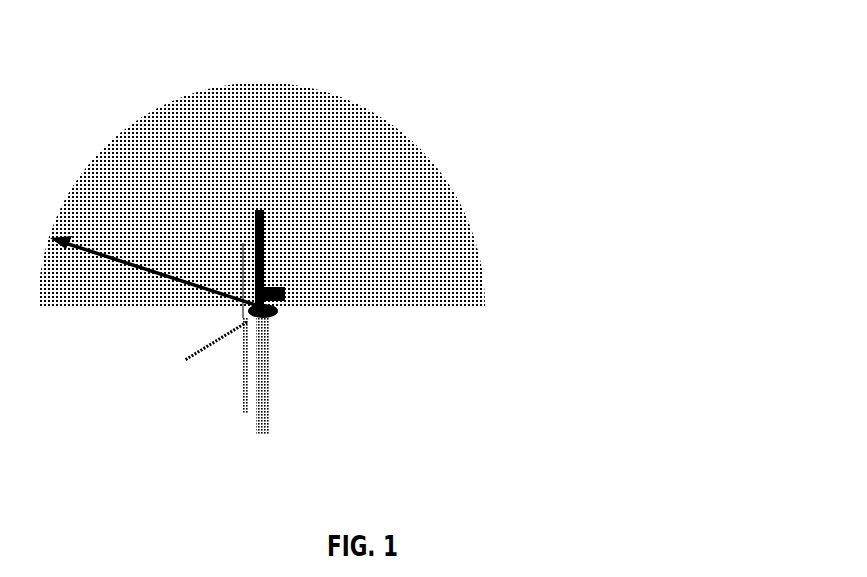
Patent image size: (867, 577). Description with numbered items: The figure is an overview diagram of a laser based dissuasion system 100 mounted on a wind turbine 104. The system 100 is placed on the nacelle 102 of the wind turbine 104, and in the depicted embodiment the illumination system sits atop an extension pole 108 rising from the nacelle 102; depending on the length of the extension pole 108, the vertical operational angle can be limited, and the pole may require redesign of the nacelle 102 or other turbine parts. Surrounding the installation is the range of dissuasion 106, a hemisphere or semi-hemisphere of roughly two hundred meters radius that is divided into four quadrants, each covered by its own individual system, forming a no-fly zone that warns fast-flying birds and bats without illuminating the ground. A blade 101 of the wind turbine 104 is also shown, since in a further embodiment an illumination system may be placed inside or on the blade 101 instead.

The laser based dissuasion system 100 is at (285, 299).
The blade 101 is at (237, 335).
The nacelle 102 is at (278, 315).
The wind turbine 104 is at (293, 375).
The range of dissuasion 106 is at (422, 215).
The extension pole 108 is at (261, 210).